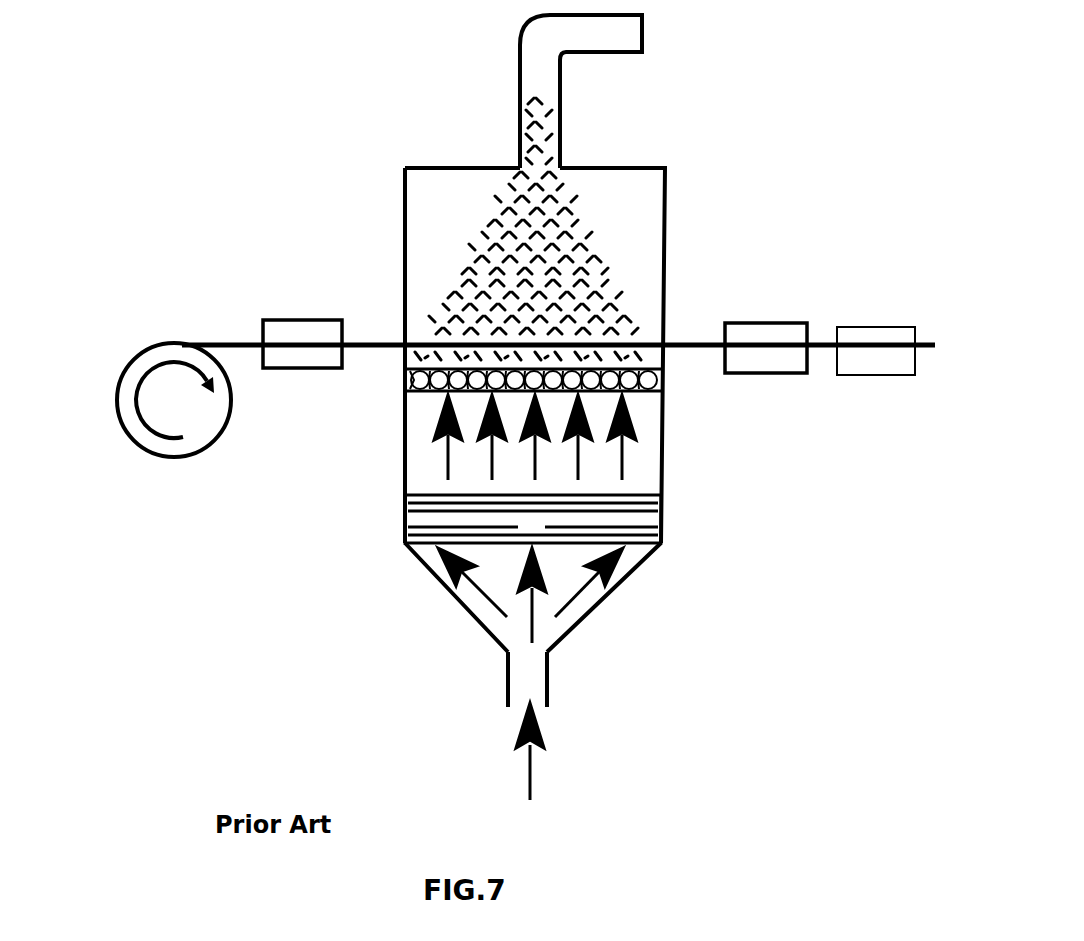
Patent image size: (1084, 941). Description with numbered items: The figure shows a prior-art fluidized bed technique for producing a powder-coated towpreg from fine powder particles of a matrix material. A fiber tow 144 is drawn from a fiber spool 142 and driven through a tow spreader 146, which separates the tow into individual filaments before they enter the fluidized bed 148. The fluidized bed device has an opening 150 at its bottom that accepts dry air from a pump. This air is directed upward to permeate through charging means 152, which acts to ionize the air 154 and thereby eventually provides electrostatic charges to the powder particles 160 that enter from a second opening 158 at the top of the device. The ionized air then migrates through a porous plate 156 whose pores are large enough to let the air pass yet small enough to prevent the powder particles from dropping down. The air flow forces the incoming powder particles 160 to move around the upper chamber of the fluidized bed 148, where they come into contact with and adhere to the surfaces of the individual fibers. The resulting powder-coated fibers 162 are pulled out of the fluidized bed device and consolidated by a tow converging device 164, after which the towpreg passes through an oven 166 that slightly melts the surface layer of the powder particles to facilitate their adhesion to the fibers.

The fiber spool 142 is at (180, 442).
The fiber tow 144 is at (228, 340).
The tow spreader 146 is at (302, 327).
The fluidized bed 148 is at (358, 701).
The opening 150 is at (517, 693).
The charging means 152 is at (653, 547).
The ionized air 154 is at (415, 448).
The porous plate 156 is at (667, 397).
The second opening 158 is at (582, 35).
The powder particles 160 is at (495, 223).
The powder-coated fibers 162 is at (692, 340).
The tow converging device 164 is at (762, 335).
The oven 166 is at (887, 337).